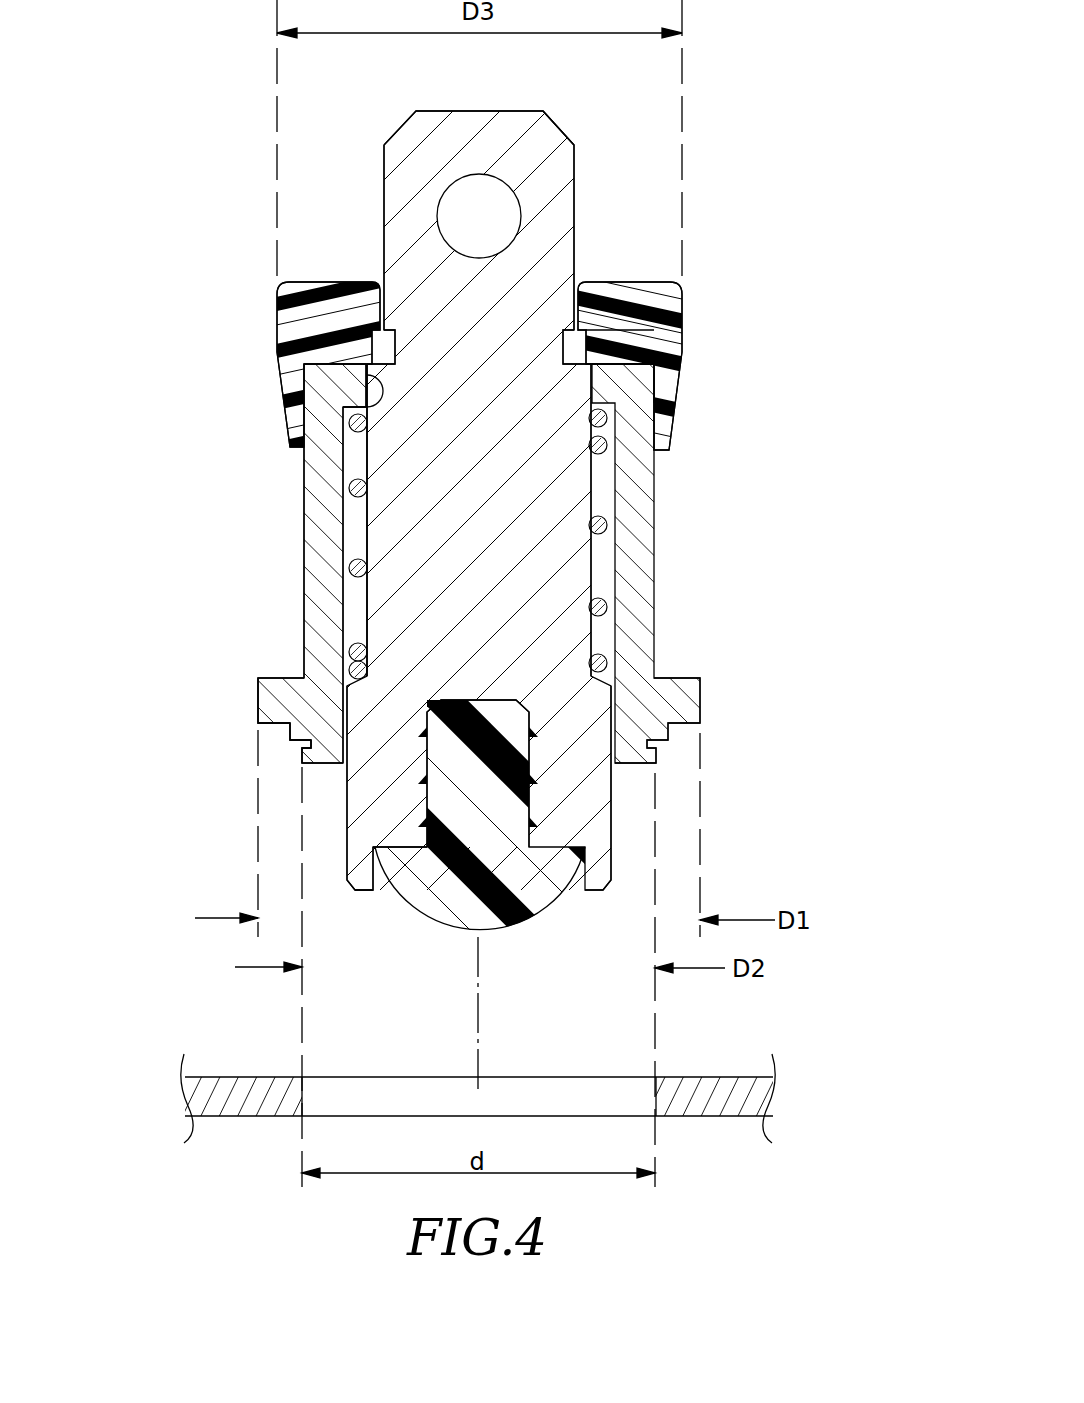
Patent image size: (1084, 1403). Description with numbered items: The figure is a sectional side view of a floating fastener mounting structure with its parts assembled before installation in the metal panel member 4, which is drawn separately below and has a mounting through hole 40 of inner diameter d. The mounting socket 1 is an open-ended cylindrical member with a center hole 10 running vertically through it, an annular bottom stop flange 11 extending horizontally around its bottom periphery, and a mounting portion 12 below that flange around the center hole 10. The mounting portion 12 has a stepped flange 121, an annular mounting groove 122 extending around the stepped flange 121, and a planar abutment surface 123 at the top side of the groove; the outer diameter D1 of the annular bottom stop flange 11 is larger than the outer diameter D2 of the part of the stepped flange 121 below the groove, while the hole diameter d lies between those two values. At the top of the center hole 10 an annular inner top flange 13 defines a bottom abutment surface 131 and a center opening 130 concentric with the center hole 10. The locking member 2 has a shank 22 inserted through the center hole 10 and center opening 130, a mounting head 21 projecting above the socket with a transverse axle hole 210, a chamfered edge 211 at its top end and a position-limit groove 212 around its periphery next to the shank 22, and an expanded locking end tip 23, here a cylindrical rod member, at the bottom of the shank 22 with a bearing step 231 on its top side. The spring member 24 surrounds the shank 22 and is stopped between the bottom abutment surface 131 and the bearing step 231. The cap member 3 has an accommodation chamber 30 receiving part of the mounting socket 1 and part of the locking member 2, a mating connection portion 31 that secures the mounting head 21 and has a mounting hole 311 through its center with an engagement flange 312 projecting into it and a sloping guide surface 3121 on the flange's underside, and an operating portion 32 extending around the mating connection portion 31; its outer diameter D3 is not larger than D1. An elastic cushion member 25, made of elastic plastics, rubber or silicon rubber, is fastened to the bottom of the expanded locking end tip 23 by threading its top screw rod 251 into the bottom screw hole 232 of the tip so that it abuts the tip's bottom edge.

The mounting socket 1 is at (290, 537).
The locking member 2 is at (578, 94).
The cap member 3 is at (754, 431).
The metal panel member 4 is at (719, 1085).
The center hole 10 is at (350, 594).
The annular bottom stop flange 11 is at (290, 677).
The mounting portion 12 is at (170, 716).
The annular inner top flange 13 is at (356, 366).
The mounting head 21 is at (551, 185).
The shank 22 is at (552, 475).
The expanded locking end tip 23 is at (578, 818).
The spring member 24 is at (604, 607).
The elastic cushion member 25 is at (528, 920).
The accommodation chamber 30 is at (658, 377).
The mating connection portion 31 is at (583, 280).
The operating portion 32 is at (667, 422).
The mounting through hole 40 is at (655, 1082).
The stepped flange 121 is at (294, 735).
The annular mounting groove 122 is at (310, 742).
The planar abutment surface 123 is at (286, 722).
The center opening 130 is at (353, 406).
The bottom abutment surface 131 is at (362, 400).
The axle hole 210 is at (472, 190).
The chamfered edge 211 is at (560, 128).
The position-limit groove 212 is at (683, 348).
The bearing step 231 is at (600, 678).
The bottom screw hole 232 is at (428, 838).
The top screw rod 251 is at (519, 825).
The mounting hole 311 is at (583, 291).
The engagement flange 312 is at (683, 305).
The sloping guide surface 3121 is at (684, 317).